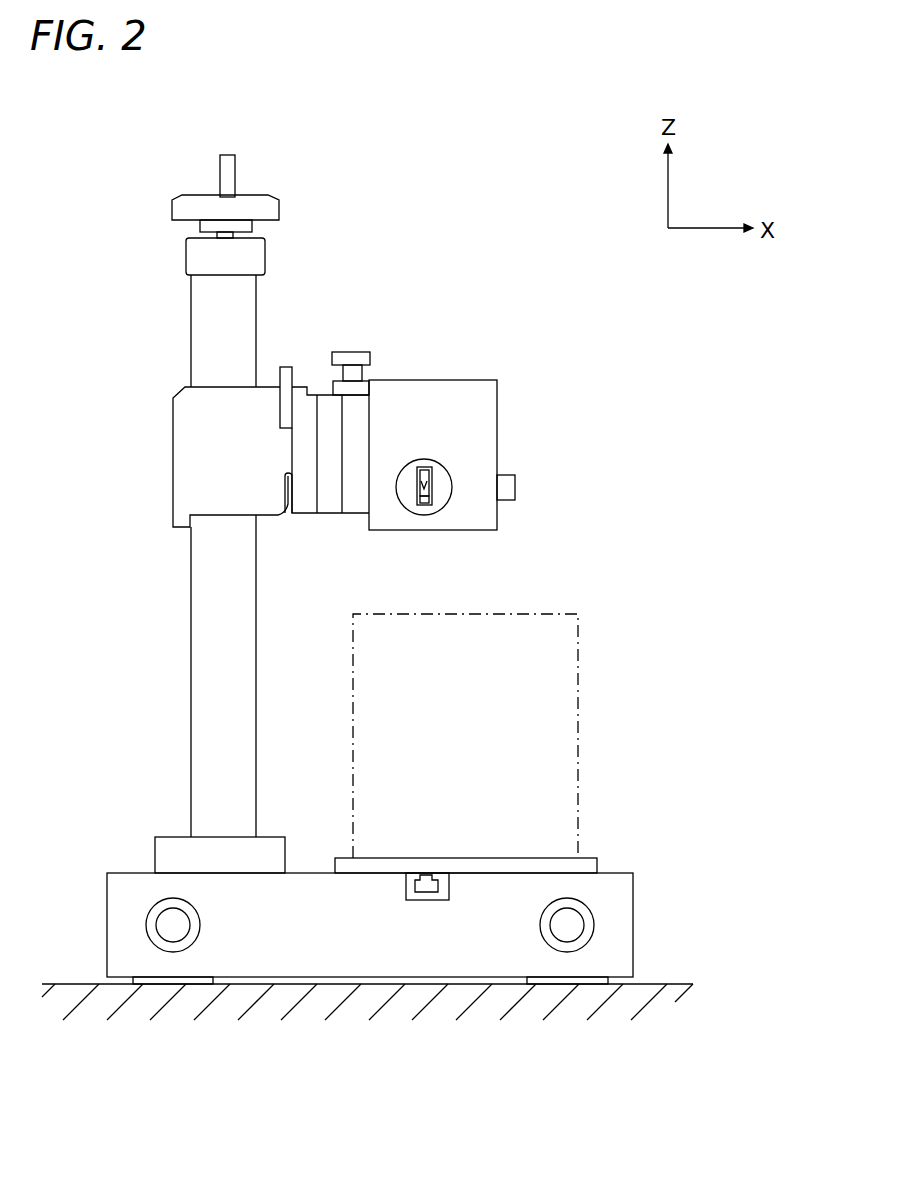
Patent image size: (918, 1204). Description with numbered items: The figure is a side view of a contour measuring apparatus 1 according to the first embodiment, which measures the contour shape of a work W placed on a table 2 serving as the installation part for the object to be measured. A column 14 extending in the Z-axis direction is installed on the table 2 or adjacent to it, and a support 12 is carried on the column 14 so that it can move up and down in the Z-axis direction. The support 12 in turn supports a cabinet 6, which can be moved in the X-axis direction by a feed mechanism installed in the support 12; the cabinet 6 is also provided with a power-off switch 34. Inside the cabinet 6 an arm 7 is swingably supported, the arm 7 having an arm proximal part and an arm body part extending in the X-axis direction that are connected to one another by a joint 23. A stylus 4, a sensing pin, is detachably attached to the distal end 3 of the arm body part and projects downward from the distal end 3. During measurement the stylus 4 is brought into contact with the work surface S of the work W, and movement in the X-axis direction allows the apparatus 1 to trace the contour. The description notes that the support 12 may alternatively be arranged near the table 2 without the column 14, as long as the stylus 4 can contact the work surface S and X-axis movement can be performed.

The contour measuring apparatus 1 is at (124, 177).
The table 2 is at (123, 913).
The distal end 3 is at (423, 466).
The stylus 4 is at (417, 490).
The cabinet 6 is at (482, 400).
The arm 7 is at (433, 468).
The support 12 is at (330, 498).
The column 14 is at (205, 685).
The joint 23 is at (426, 506).
The power-off switch 34 is at (507, 490).
The work surface S is at (521, 612).
The work W is at (578, 735).